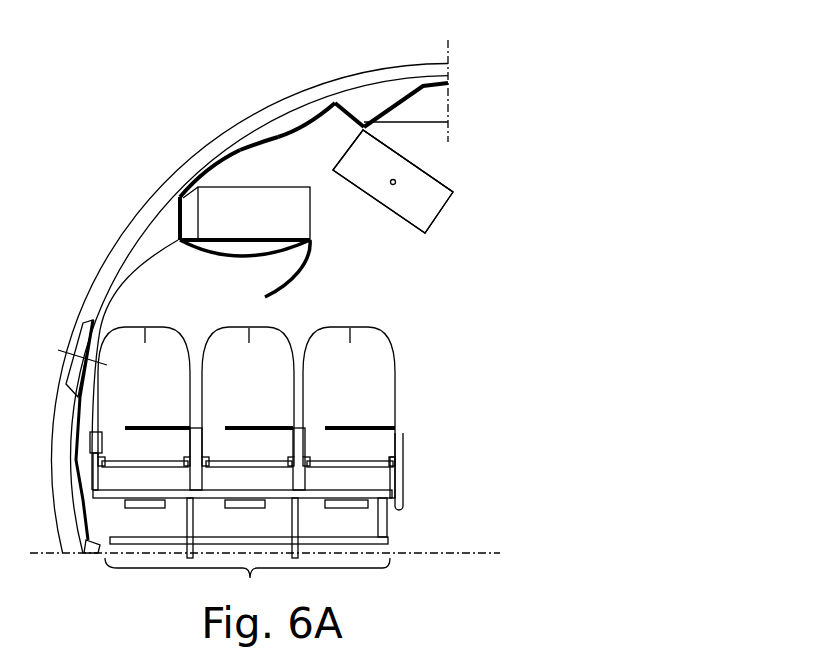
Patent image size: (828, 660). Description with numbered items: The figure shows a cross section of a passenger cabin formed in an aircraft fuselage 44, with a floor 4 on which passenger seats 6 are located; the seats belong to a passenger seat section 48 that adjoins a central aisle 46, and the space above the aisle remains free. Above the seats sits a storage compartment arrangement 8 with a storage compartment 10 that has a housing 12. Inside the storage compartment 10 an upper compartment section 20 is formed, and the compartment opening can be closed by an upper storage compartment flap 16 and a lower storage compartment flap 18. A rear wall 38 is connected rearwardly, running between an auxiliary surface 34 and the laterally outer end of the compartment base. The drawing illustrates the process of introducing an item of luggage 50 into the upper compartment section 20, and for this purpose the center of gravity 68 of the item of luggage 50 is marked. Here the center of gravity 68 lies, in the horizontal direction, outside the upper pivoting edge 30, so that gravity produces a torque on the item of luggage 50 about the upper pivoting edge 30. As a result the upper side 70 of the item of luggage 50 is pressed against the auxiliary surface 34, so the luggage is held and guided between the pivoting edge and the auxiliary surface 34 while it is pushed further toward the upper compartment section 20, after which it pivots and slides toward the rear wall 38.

The floor 4 is at (411, 534).
The passenger seat 6 is at (246, 397).
The storage compartment arrangement 8 is at (292, 91).
The storage compartment 10 is at (187, 193).
The housing 12 is at (222, 157).
The upper storage compartment flap 16 is at (404, 99).
The lower storage compartment flap 18 is at (297, 277).
The upper compartment section 20 is at (291, 130).
The upper pivoting edge 30 is at (371, 200).
The auxiliary surface 34 is at (344, 126).
The rear wall 38 is at (265, 146).
The aircraft fuselage 44 is at (140, 213).
The central aisle 46 is at (458, 534).
The passenger seat section 48 is at (247, 581).
The item of luggage 50 is at (441, 283).
The center of gravity 68 is at (396, 181).
The upper side 70 is at (417, 145).